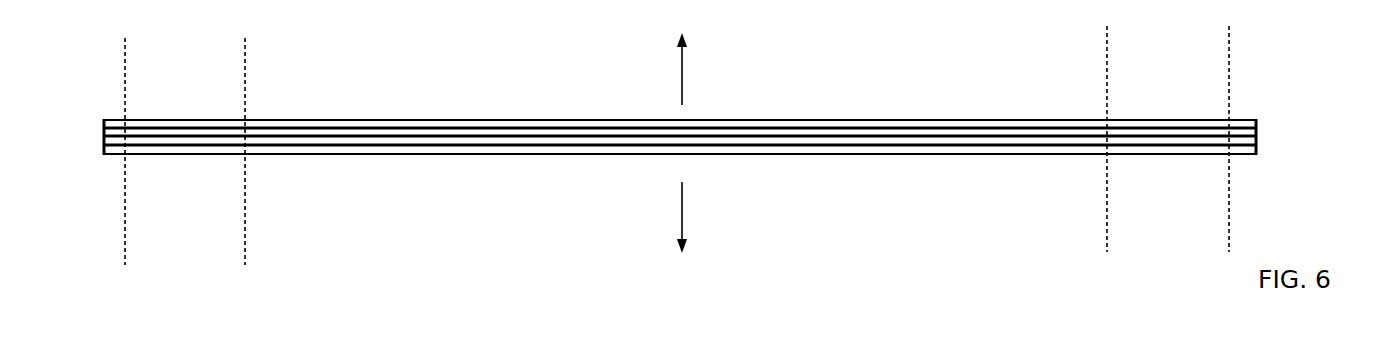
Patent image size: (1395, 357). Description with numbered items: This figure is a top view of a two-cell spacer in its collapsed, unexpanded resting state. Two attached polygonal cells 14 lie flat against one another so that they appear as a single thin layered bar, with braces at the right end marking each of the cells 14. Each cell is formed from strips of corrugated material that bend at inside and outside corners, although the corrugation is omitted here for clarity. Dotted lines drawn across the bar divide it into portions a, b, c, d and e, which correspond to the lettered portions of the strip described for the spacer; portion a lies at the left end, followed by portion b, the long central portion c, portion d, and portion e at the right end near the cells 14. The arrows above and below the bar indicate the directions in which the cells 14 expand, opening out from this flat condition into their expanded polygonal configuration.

The cells 14 is at (1262, 157).
The portion a is at (120, 117).
The portion b is at (140, 117).
The portion c is at (378, 117).
The portion d is at (1122, 117).
The portion e is at (1242, 117).